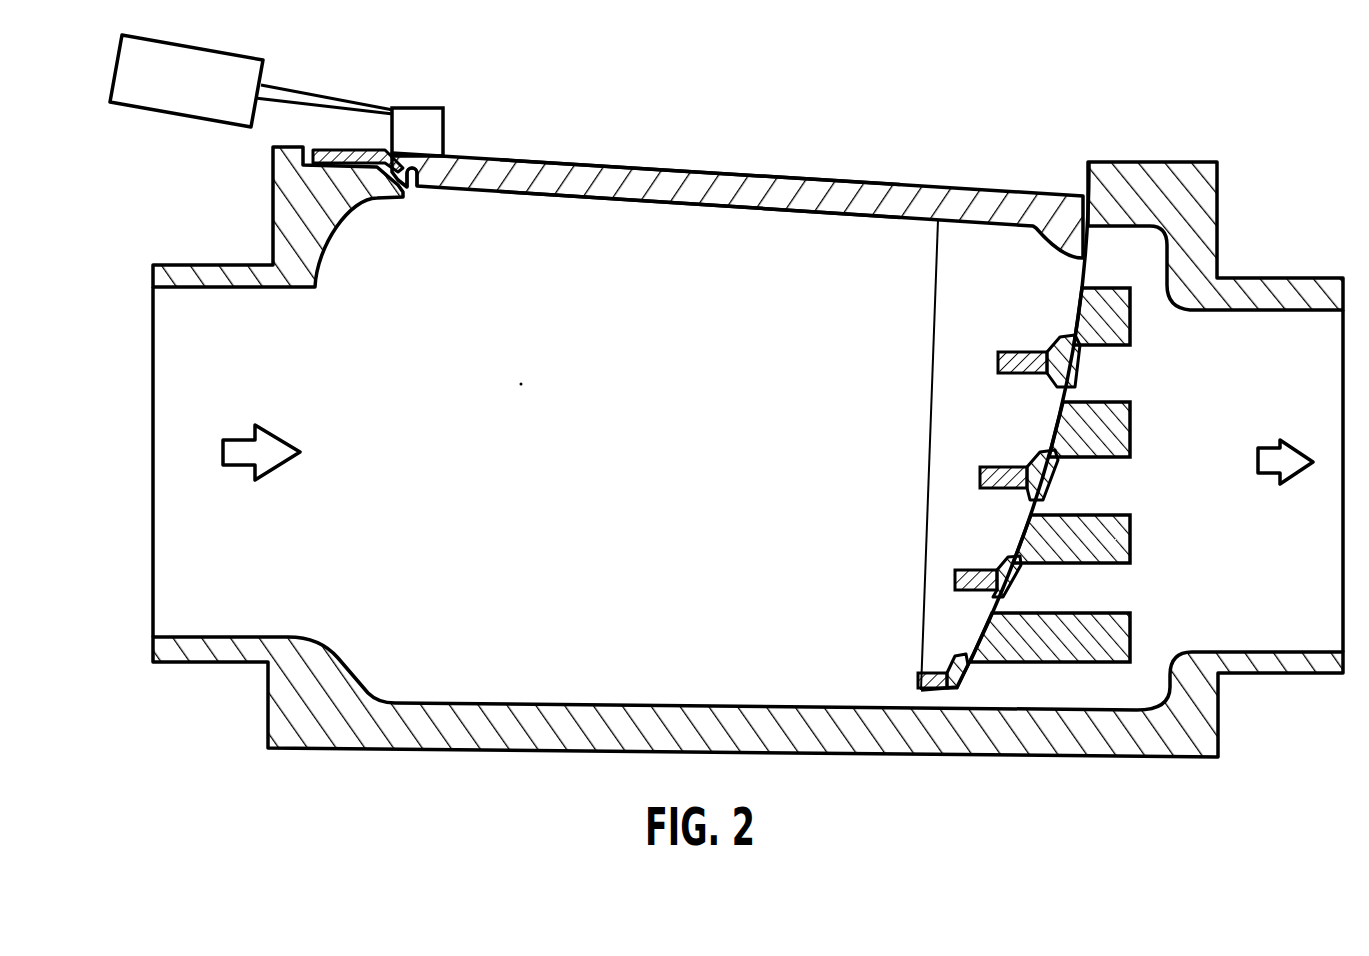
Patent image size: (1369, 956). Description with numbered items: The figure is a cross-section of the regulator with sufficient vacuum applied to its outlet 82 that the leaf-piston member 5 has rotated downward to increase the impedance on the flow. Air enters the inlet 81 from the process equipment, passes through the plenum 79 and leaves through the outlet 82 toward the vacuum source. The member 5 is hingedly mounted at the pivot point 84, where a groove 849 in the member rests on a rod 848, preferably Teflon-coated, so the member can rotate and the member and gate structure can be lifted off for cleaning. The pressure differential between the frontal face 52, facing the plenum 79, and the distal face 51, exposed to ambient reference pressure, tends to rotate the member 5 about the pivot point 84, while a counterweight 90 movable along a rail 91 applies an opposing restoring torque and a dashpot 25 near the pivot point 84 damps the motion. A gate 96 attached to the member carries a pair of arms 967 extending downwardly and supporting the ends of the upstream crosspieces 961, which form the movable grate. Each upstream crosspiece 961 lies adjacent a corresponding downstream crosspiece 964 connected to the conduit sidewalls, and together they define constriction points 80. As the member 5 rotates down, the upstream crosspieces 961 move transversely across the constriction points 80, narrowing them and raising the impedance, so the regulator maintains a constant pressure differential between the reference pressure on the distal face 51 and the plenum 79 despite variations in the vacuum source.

The leaf-piston member 5 is at (752, 190).
The dashpot 25 is at (345, 193).
The distal face 51 is at (662, 171).
The frontal face 52 is at (655, 205).
The plenum 79 is at (616, 492).
The constriction points 80 is at (1066, 273).
The inlet 81 is at (198, 262).
The outlet 82 is at (1297, 277).
The pivot point 84 is at (492, 180).
The counterweight 90 is at (204, 102).
The rail 91 is at (333, 98).
The gate 96 is at (1005, 170).
The rod 848 is at (412, 176).
The groove 849 is at (390, 152).
The upstream crosspieces 961 is at (1043, 350).
The downstream crosspieces 964 is at (1130, 318).
The arms 967 is at (1003, 432).